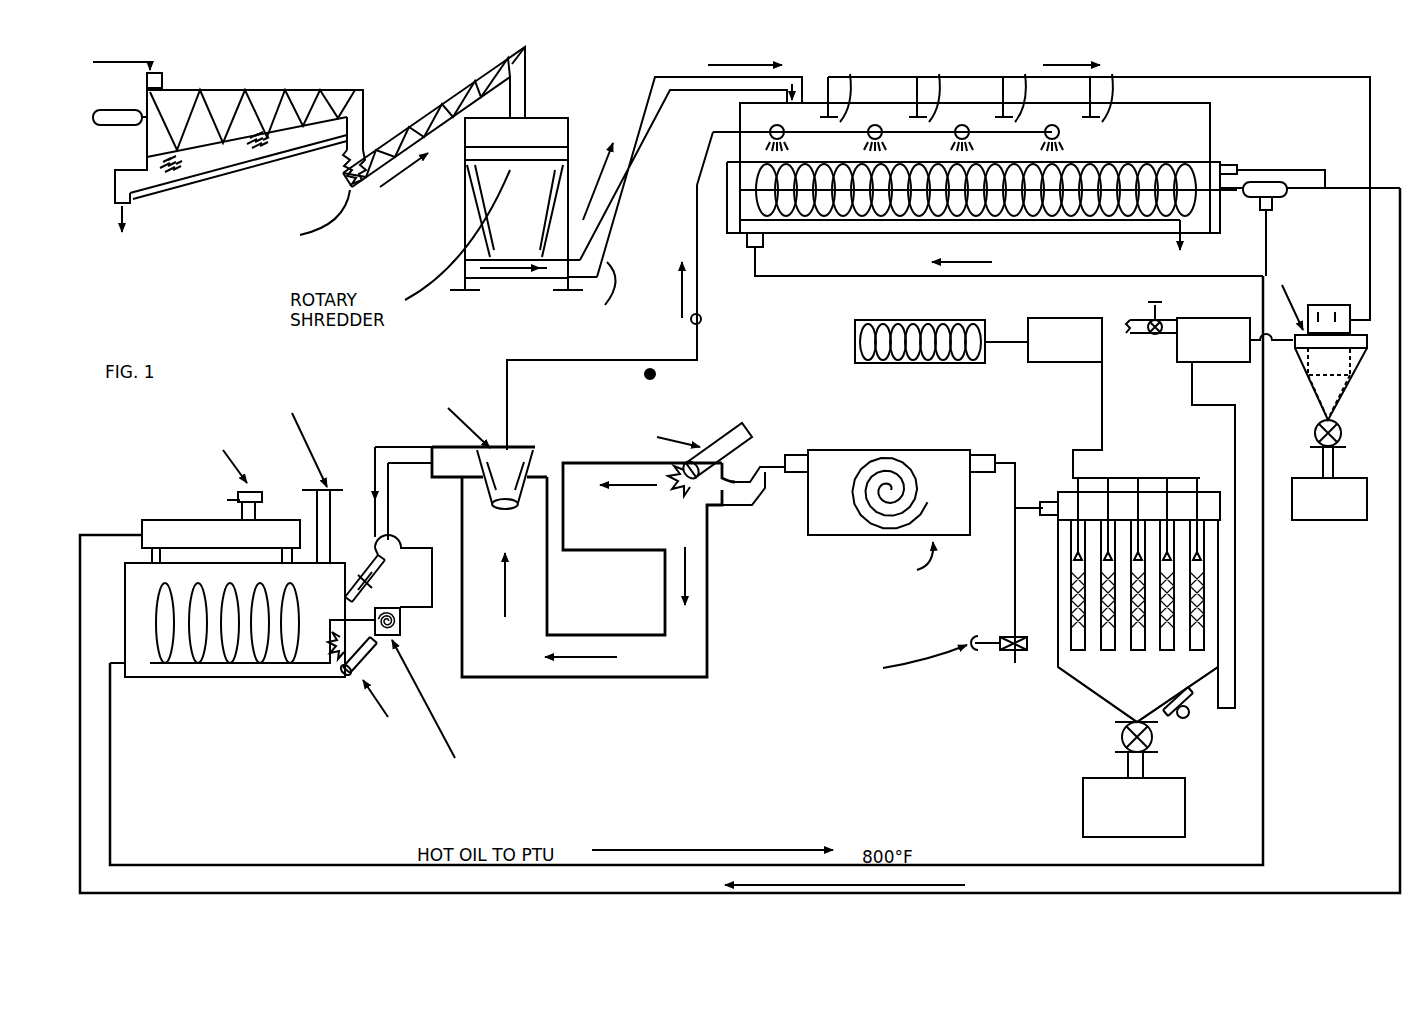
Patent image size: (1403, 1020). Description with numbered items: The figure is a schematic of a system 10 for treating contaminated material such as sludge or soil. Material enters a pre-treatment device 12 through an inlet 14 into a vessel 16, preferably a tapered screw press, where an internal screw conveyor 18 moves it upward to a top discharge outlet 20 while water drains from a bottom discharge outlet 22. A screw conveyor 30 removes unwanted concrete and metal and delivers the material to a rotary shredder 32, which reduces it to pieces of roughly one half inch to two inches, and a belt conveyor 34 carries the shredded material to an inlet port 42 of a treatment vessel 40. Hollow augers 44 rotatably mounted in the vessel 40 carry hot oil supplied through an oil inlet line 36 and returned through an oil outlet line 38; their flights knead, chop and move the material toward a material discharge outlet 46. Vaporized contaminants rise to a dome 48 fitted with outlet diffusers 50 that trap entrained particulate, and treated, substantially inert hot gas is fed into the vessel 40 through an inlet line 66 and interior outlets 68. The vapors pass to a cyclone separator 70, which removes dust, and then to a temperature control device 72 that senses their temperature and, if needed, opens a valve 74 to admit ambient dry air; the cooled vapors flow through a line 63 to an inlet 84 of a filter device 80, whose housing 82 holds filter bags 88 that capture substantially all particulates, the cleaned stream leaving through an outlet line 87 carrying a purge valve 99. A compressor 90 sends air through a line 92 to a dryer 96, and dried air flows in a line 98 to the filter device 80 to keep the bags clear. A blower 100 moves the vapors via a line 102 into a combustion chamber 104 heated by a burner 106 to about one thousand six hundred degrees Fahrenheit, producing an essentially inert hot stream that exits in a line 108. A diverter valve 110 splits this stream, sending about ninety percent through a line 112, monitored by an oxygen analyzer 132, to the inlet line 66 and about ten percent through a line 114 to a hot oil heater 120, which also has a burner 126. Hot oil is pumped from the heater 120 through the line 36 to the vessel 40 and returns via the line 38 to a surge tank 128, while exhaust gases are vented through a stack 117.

The system 10 is at (172, 403).
The material pre-treatment device 12 is at (255, 163).
The inlet 14 is at (135, 88).
The vessel 16 is at (205, 168).
The internal screw conveyor 18 is at (275, 147).
The top discharge outlet 20 is at (362, 122).
The bottom discharge outlet 22 is at (135, 203).
The screw conveyor 30 is at (447, 130).
The rotary shredder 32 is at (527, 118).
The belt conveyor 34 is at (630, 133).
The oil inlet line 36 is at (1272, 215).
The oil outlet line 38 is at (1392, 637).
The treatment vessel 40 is at (780, 233).
The inlet port 42 is at (787, 98).
The hollow augers 44 is at (1090, 177).
The material discharge outlet 46 is at (1177, 237).
The dome 48 is at (1212, 137).
The outlet diffusers 50 is at (1118, 100).
The line 63 is at (1265, 582).
The inlet line 66 is at (700, 273).
The interior outlets 68 is at (770, 128).
The separator 70 is at (1365, 357).
The temperature control device 72 is at (1205, 323).
The valve 74 is at (1163, 318).
The filter device 80 is at (1210, 660).
The housing 82 is at (1195, 680).
The inlet 84 is at (1220, 502).
The outlet line 87 is at (1030, 493).
The filter bag 88 is at (1205, 629).
The compressor 90 is at (882, 320).
The line 92 is at (1013, 340).
The dryer 96 is at (1038, 320).
The line 98 is at (1093, 447).
The purge valve 99 is at (1003, 652).
The blower 100 is at (948, 537).
The line 102 is at (748, 483).
The combustion chamber 104 is at (705, 677).
The burner 106 is at (733, 430).
The line 108 is at (460, 677).
The diverter valve 110 is at (515, 517).
The line 112 is at (698, 303).
The line 114 is at (388, 483).
The stack 117 is at (315, 505).
The hot oil heater 120 is at (403, 617).
The burner 126 is at (343, 673).
The surge tank 128 is at (177, 520).
The O2 analyzer 132 is at (687, 327).